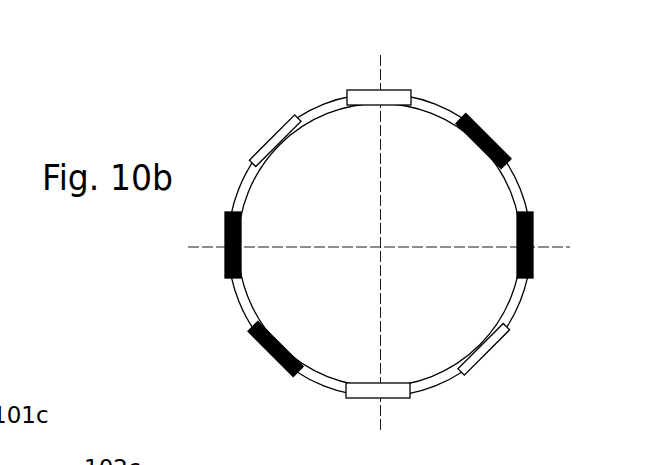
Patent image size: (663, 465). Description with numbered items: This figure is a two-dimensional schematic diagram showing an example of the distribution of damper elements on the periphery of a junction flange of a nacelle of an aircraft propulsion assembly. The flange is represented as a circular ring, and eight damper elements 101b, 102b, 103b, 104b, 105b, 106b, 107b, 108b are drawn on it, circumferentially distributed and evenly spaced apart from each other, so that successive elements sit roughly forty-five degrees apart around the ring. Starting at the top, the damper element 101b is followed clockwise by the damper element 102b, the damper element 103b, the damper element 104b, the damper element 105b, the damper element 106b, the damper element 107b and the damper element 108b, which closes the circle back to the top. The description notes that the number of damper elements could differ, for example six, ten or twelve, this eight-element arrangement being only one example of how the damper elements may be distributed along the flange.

The damper element 101b is at (407, 90).
The damper element 102b is at (490, 131).
The damper element 103b is at (534, 212).
The damper element 104b is at (492, 343).
The damper element 105b is at (372, 398).
The damper element 106b is at (268, 354).
The damper element 107b is at (225, 270).
The damper element 108b is at (280, 124).